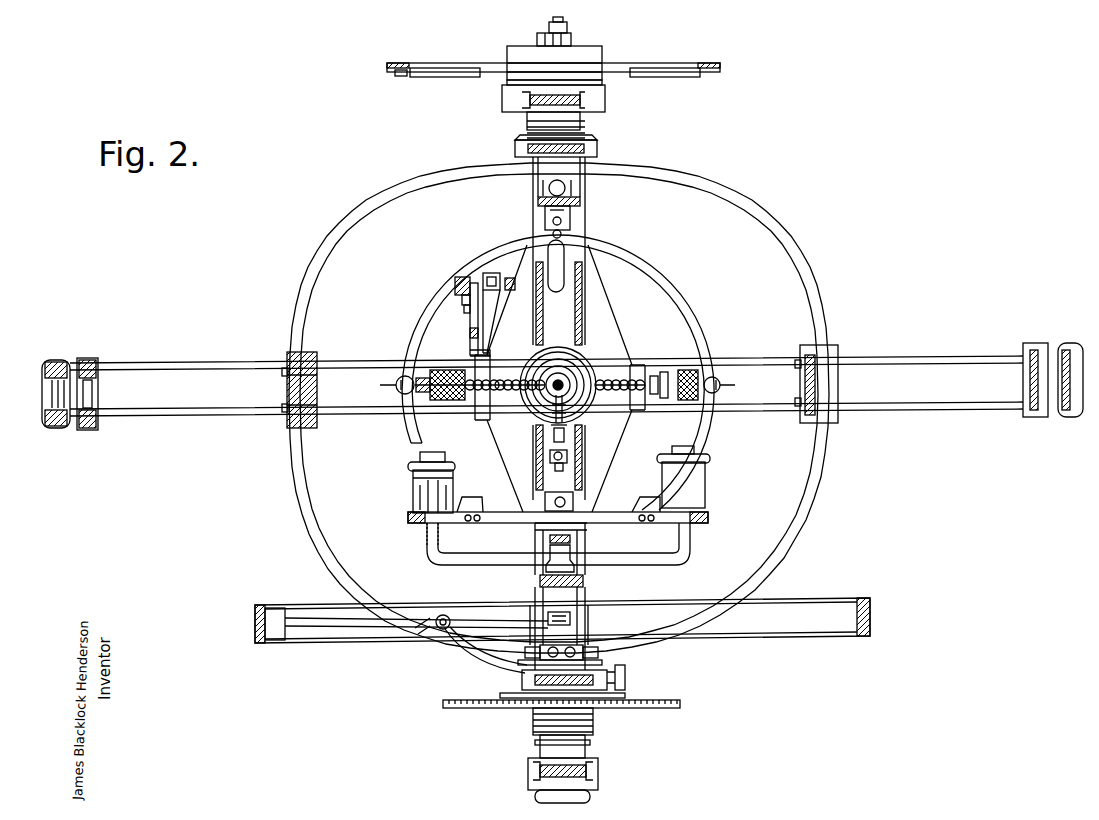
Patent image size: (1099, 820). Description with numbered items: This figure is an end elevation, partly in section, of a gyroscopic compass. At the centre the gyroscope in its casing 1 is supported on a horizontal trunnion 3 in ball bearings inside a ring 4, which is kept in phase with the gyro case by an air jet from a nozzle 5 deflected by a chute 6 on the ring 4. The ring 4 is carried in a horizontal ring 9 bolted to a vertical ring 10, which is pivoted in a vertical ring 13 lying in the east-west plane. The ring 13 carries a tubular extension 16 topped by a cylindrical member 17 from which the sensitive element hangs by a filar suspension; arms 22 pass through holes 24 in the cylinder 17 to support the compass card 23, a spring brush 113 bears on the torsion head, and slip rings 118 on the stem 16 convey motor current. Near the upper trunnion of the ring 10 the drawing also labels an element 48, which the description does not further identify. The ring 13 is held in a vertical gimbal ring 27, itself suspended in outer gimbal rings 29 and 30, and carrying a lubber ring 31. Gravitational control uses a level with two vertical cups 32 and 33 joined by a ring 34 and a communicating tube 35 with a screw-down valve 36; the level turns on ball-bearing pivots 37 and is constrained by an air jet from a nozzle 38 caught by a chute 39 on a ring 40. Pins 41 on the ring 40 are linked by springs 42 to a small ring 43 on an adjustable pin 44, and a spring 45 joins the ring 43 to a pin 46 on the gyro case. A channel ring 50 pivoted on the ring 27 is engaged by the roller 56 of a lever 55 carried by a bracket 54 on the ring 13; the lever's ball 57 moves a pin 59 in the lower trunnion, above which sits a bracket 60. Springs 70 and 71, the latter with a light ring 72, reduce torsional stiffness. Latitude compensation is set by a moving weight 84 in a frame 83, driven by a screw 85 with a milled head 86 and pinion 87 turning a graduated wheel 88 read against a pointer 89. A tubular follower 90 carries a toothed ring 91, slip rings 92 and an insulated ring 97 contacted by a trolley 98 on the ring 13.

The gyroscope casing 1 is at (598, 304).
The horizontal trunnion 3 is at (580, 363).
The ring 4 is at (583, 201).
The nozzle 5 is at (570, 539).
The chute 6 is at (570, 550).
The horizontal ring 9 is at (305, 355).
The vertical ring 10 is at (347, 222).
The vertical ring 13 is at (597, 149).
The tubular extension 16 is at (527, 119).
The cylindrical member 17 is at (615, 76).
The arms 22 is at (468, 74).
The compass card 23 is at (425, 70).
The holes 24 is at (507, 65).
The vertical gimbal ring 27 is at (605, 101).
The outer gimbal ring 29 is at (86, 358).
The outermost gimbal ring 30 is at (55, 360).
The lubber ring 31 is at (394, 72).
The vertical cup 32 is at (413, 481).
The vertical cup 33 is at (705, 483).
The ring 34 is at (708, 518).
The communicating tube 35 is at (690, 558).
The screw-down valve 36 is at (445, 487).
The ball-bearing pivot 37 is at (575, 502).
The nozzle 38 is at (565, 266).
The chute 39 is at (571, 215).
The ring 40 is at (655, 273).
The pin 41 is at (397, 389).
The springs 42 is at (505, 380).
The small ring 43 is at (585, 380).
The pin 44 is at (580, 398).
The spring 45 is at (566, 439).
The pin 46 is at (568, 458).
The block 48 is at (545, 215).
The horizontal channel ring 50 is at (290, 606).
The bracket 54 is at (505, 669).
The lever 55 is at (368, 643).
The axial roller 56 is at (275, 643).
The ball 57 is at (533, 612).
The pin 59 is at (556, 612).
The bracket 60 is at (585, 650).
The spring 70 is at (565, 188).
The spring 71 is at (576, 650).
The light ring 72 is at (602, 662).
The frame 83 is at (470, 283).
The moving weight 84 is at (490, 273).
The screw 85 is at (510, 278).
The milled head 86 is at (462, 300).
The toothed pinion 87 is at (467, 313).
The toothed wheel 88 is at (470, 334).
The fixed pointer 89 is at (470, 353).
The tubular follower 90 is at (593, 712).
The horizontal toothed ring 91 is at (660, 708).
The slip rings 92 is at (533, 727).
The insulated ring 97 is at (625, 695).
The trolley 98 is at (625, 673).
The spring brush 113 is at (567, 25).
The slip rings 118 is at (585, 131).